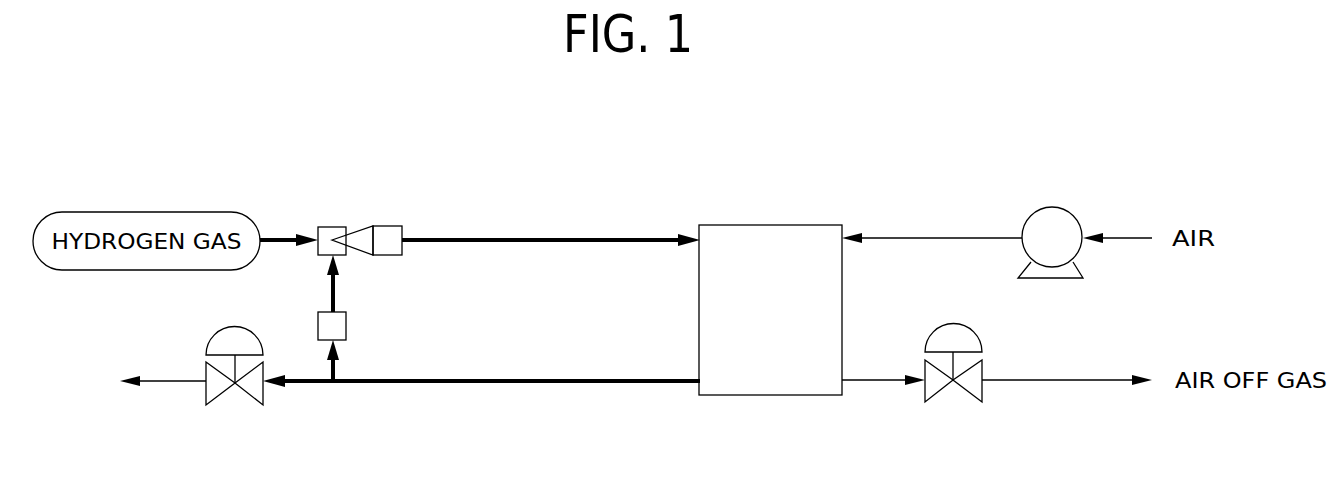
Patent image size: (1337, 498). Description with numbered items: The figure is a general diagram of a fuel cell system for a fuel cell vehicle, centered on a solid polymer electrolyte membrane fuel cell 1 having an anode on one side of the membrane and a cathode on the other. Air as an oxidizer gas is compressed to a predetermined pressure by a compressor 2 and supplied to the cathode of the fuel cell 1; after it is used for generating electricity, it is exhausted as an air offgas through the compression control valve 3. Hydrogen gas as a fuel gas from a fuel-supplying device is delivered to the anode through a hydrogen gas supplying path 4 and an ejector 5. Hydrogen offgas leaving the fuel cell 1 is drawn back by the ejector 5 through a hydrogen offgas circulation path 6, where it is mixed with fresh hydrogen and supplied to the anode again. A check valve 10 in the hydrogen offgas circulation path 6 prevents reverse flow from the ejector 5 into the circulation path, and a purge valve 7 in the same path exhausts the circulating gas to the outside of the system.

The solid polymer electrolyte membrane fuel cell 1 is at (772, 225).
The compressor 2 is at (1050, 208).
The compression control valve 3 is at (965, 405).
The hydrogen gas supplying path 4 is at (277, 238).
The ejector 5 is at (334, 226).
The hydrogen offgas circulation path 6 is at (505, 387).
The purge valve 7 is at (248, 408).
The check valve 10 is at (346, 325).